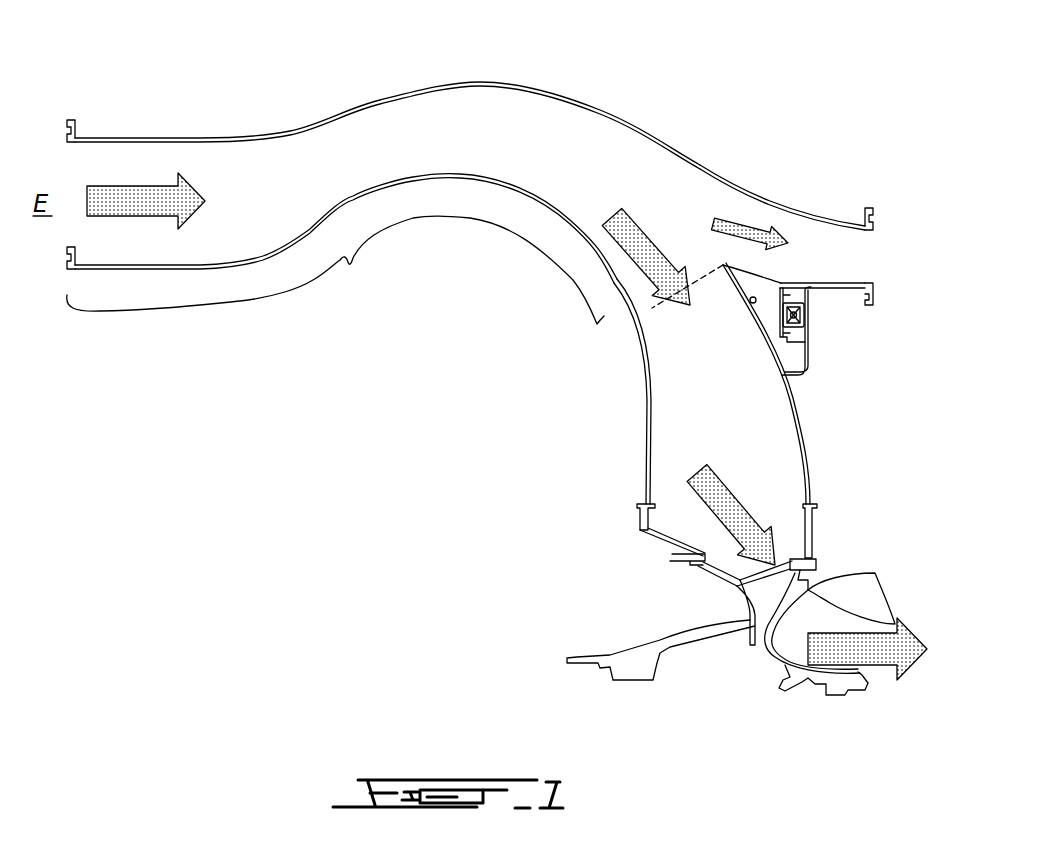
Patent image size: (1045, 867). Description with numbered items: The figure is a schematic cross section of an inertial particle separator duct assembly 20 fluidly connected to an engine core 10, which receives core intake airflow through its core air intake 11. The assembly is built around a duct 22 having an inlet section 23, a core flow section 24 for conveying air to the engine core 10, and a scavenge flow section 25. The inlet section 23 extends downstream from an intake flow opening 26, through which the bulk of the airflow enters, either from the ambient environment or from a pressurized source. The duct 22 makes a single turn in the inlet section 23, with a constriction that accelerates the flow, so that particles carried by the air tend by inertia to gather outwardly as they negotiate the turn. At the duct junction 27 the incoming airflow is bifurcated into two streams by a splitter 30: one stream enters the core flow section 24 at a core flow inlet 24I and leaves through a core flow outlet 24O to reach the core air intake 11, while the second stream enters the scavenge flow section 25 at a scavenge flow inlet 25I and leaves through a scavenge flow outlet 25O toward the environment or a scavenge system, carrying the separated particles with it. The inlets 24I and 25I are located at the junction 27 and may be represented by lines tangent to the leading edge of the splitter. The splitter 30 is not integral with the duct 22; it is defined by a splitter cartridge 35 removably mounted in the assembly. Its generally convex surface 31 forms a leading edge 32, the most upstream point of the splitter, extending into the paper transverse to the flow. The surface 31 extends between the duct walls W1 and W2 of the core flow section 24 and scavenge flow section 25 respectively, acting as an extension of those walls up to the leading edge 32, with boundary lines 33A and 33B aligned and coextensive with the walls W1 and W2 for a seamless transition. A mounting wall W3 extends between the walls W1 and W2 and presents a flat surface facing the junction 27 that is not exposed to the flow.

The engine core 10 is at (896, 572).
The core air intake 11 is at (824, 553).
The inertial particle separator duct assembly 20 is at (862, 106).
The duct 22 is at (210, 138).
The inlet section 23 is at (342, 249).
The core flow section 24 is at (603, 314).
The core flow inlet 24I is at (652, 308).
The core flow outlet 24O is at (646, 527).
The scavenge flow section 25 is at (874, 210).
The scavenge flow inlet 25I is at (723, 265).
The scavenge flow outlet 25O is at (890, 236).
The opening 26 is at (92, 161).
The duct junction 27 is at (697, 243).
The splitter 30 is at (781, 265).
The surface 31 is at (749, 318).
The leading edge 32 is at (718, 263).
The boundary line 33A is at (773, 347).
The boundary line 33B is at (788, 284).
The splitter cartridge 35 is at (822, 314).
The duct wall W1 is at (804, 406).
The duct wall W2 is at (847, 290).
The mounting wall W3 is at (810, 349).